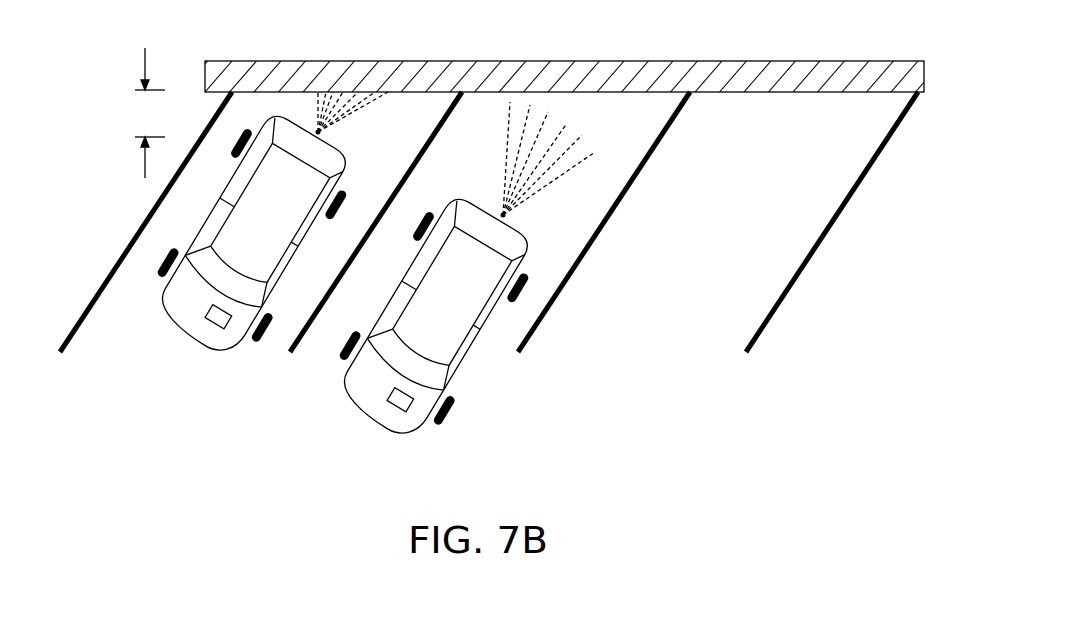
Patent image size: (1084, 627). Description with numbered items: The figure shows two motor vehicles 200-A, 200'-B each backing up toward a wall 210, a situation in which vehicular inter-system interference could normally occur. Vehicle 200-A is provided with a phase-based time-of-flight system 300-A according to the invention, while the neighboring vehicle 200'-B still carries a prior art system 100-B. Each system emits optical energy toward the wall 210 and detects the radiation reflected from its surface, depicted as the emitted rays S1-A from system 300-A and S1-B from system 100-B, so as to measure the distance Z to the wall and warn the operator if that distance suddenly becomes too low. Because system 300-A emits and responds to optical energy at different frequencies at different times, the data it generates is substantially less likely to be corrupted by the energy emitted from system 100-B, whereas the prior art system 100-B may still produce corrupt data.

The wall 210 is at (375, 61).
The distance Z is at (150, 113).
The vehicle 200-A is at (300, 221).
The vehicle 200'-B is at (432, 319).
The phase-based TOF system 300-A is at (209, 320).
The prior art system 100-B is at (398, 405).
The sensor signal rays of vehicle A S1-A is at (353, 109).
The sensor signal rays of vehicle B S1-B is at (500, 193).